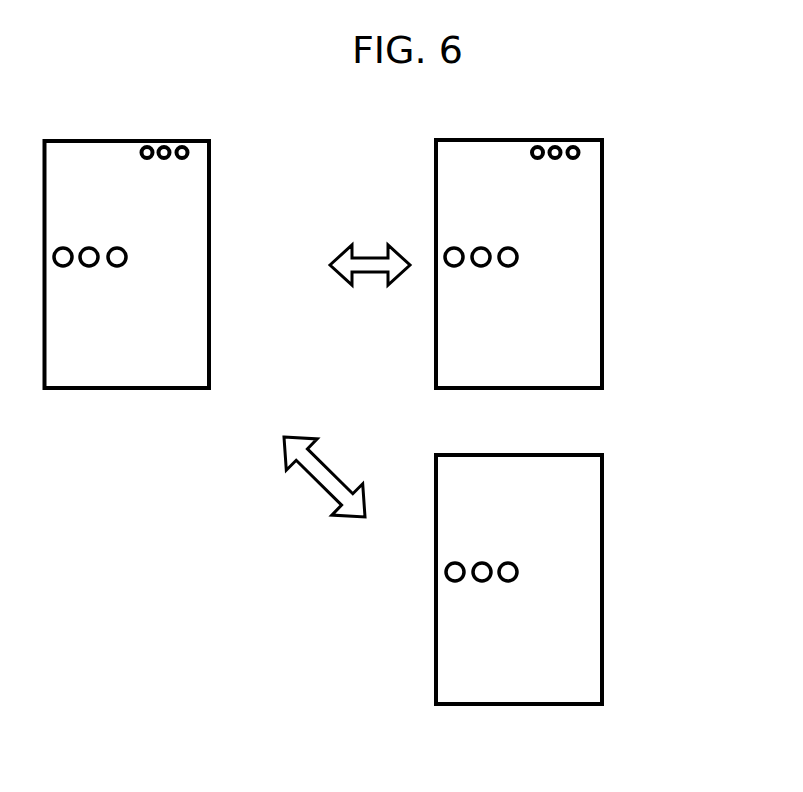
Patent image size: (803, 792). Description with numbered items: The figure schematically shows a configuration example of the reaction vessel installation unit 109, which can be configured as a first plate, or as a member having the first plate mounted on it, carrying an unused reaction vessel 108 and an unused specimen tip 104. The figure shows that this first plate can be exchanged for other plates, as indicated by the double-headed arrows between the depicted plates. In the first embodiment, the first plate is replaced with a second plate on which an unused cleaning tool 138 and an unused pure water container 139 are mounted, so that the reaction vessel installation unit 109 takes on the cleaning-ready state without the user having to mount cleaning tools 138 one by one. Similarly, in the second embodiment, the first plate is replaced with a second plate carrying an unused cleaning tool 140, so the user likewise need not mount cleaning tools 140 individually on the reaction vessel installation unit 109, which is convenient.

The specimen tip 104 is at (186, 149).
The reaction vessel 108 is at (127, 249).
The reaction vessel installation unit 109 is at (170, 315).
The cleaning tool 138 is at (577, 149).
The pure water container 139 is at (518, 249).
The cleaning tool 140 is at (519, 565).